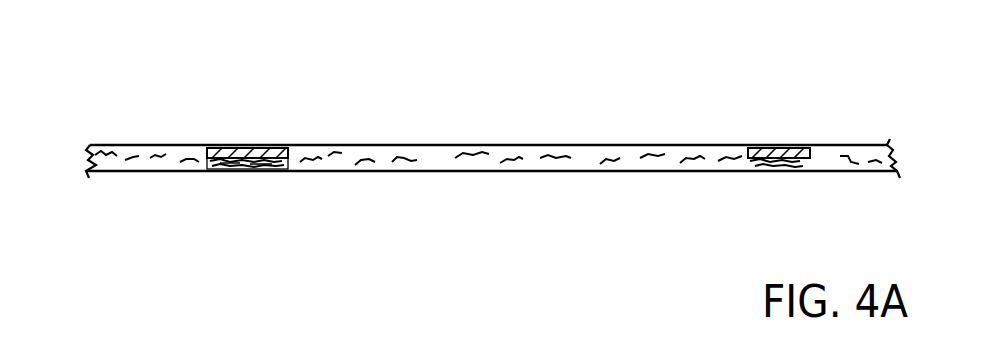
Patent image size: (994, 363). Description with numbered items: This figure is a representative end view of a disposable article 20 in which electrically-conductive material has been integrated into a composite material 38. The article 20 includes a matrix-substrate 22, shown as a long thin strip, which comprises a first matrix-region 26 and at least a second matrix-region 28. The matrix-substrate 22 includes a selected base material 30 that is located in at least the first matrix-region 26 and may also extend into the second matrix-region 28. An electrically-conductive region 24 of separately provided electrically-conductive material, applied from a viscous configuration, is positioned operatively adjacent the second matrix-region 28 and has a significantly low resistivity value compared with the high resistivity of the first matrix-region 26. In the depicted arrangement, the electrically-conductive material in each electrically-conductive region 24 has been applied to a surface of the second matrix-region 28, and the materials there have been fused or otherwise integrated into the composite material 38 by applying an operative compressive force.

The disposable article 20 is at (116, 108).
The matrix-substrate 22 is at (127, 173).
The electrically-conductive region 24 is at (247, 147).
The first matrix-region 26 is at (501, 132).
The second matrix-region 28 is at (282, 194).
The base material 30 is at (440, 165).
The composite material 38 is at (230, 172).